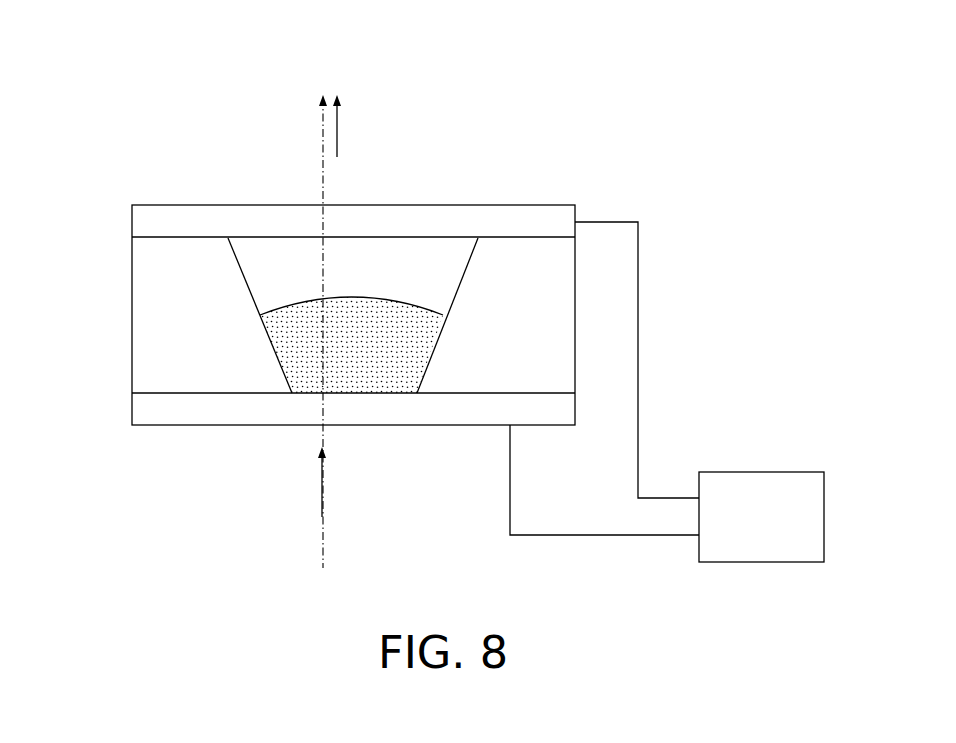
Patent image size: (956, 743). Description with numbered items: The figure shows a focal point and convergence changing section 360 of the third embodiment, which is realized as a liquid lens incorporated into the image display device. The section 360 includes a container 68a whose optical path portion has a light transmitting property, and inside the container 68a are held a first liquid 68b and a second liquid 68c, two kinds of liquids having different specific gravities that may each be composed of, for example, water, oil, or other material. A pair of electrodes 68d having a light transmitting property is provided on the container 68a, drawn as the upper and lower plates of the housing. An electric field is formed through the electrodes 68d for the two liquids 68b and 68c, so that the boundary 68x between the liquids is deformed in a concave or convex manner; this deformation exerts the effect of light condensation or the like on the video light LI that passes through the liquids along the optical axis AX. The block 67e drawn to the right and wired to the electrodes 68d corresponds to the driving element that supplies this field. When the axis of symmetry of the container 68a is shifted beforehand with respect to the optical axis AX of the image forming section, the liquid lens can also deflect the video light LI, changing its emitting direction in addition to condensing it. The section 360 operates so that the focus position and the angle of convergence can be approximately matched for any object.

The focal point and convergence changing section 360 is at (574, 146).
The container 68a is at (147, 325).
The first liquid 68b is at (373, 373).
The second liquid 68c is at (397, 268).
The pair of electrodes 68d is at (163, 222).
The boundary 68x is at (425, 308).
The controller 67e is at (808, 487).
The video light LI is at (336, 128).
The optical axis AX is at (322, 530).